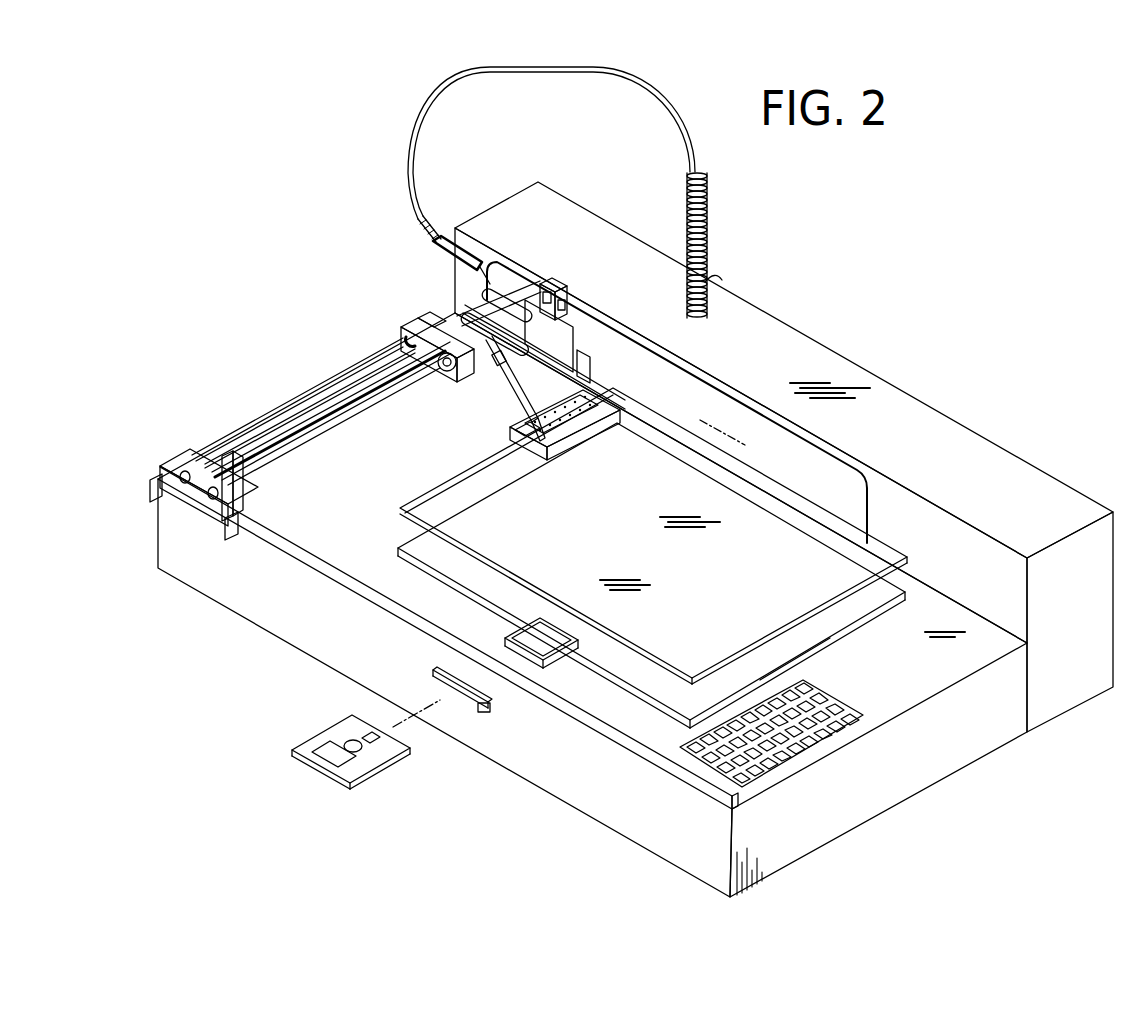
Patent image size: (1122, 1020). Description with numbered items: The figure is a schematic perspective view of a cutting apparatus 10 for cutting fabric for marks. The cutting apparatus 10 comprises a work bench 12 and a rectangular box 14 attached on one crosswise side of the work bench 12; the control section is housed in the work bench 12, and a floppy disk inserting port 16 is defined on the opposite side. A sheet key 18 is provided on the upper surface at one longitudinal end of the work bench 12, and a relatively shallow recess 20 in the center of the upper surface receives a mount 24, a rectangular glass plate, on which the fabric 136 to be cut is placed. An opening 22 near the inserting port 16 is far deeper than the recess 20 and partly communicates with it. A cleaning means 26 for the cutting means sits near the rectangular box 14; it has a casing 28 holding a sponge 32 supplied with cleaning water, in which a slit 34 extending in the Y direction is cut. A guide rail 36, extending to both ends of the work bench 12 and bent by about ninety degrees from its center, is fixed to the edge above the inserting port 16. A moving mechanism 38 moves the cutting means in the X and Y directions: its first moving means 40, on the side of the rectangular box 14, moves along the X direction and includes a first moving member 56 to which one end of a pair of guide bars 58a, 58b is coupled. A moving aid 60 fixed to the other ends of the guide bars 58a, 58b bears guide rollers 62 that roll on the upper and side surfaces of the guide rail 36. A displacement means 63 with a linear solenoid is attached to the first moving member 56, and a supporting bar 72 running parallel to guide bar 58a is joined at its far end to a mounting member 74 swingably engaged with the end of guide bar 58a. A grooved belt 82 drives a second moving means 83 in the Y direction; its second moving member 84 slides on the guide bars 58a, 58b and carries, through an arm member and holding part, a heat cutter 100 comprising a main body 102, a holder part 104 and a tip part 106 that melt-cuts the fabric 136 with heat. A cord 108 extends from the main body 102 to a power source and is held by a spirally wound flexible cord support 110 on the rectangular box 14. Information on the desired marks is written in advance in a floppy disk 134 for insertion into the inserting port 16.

The cutting apparatus 10 is at (880, 251).
The work bench 12 is at (877, 800).
The rectangular box 14 is at (1013, 485).
The floppy disk inserting port 16 is at (490, 705).
The sheet key 18 is at (840, 727).
The recess 20 is at (857, 623).
The opening 22 is at (547, 655).
The mount 24 is at (893, 577).
The cleaning means 26 is at (606, 385).
The casing 28 is at (566, 437).
The sponge 32 is at (547, 432).
The slit 34 is at (552, 410).
The guide rail 36 is at (680, 782).
The moving mechanism 38 is at (354, 300).
The first moving means 40 is at (565, 338).
The first moving member 56 is at (590, 385).
The guide bar 58a is at (327, 430).
The guide bar 58b is at (213, 460).
The moving aid 60 is at (212, 507).
The guide rollers 62 is at (150, 498).
The displacement means 63 is at (526, 286).
The supporting bar 72 is at (343, 400).
The mounting member 74 is at (250, 493).
The grooved belt 82 is at (273, 443).
The second moving means 83 is at (452, 375).
The second moving member 84 is at (418, 322).
The heat cutter 100 is at (460, 262).
The main body 102 is at (470, 262).
The holder part 104 is at (513, 373).
The tip part 106 is at (515, 443).
The cord 108 is at (488, 70).
The cord support 110 is at (707, 222).
The floppy disk 134 is at (375, 755).
The fabric 136 is at (797, 610).